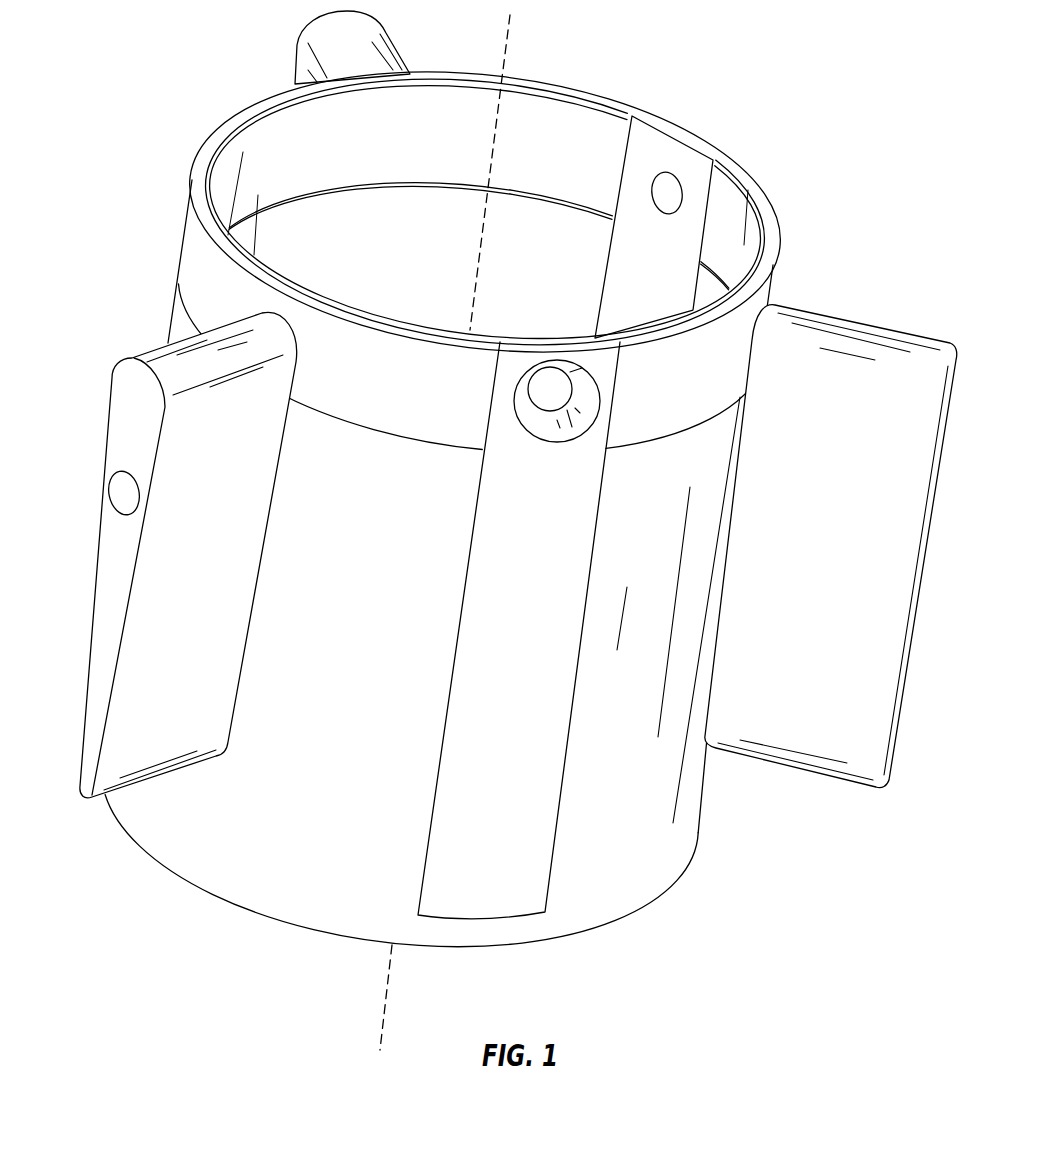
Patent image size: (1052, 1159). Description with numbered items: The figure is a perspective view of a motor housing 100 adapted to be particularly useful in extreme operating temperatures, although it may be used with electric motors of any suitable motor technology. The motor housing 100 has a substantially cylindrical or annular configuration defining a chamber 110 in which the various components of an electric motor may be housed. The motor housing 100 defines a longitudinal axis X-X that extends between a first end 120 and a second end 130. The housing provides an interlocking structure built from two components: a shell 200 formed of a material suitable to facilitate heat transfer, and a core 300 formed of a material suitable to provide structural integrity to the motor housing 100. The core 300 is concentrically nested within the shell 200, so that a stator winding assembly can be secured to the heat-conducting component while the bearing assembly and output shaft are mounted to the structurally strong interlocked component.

The motor housing 100 is at (94, 164).
The chamber 110 is at (548, 232).
The first end 120 is at (170, 868).
The second end 130 is at (262, 110).
The shell 200 is at (660, 818).
The core 300 is at (778, 282).